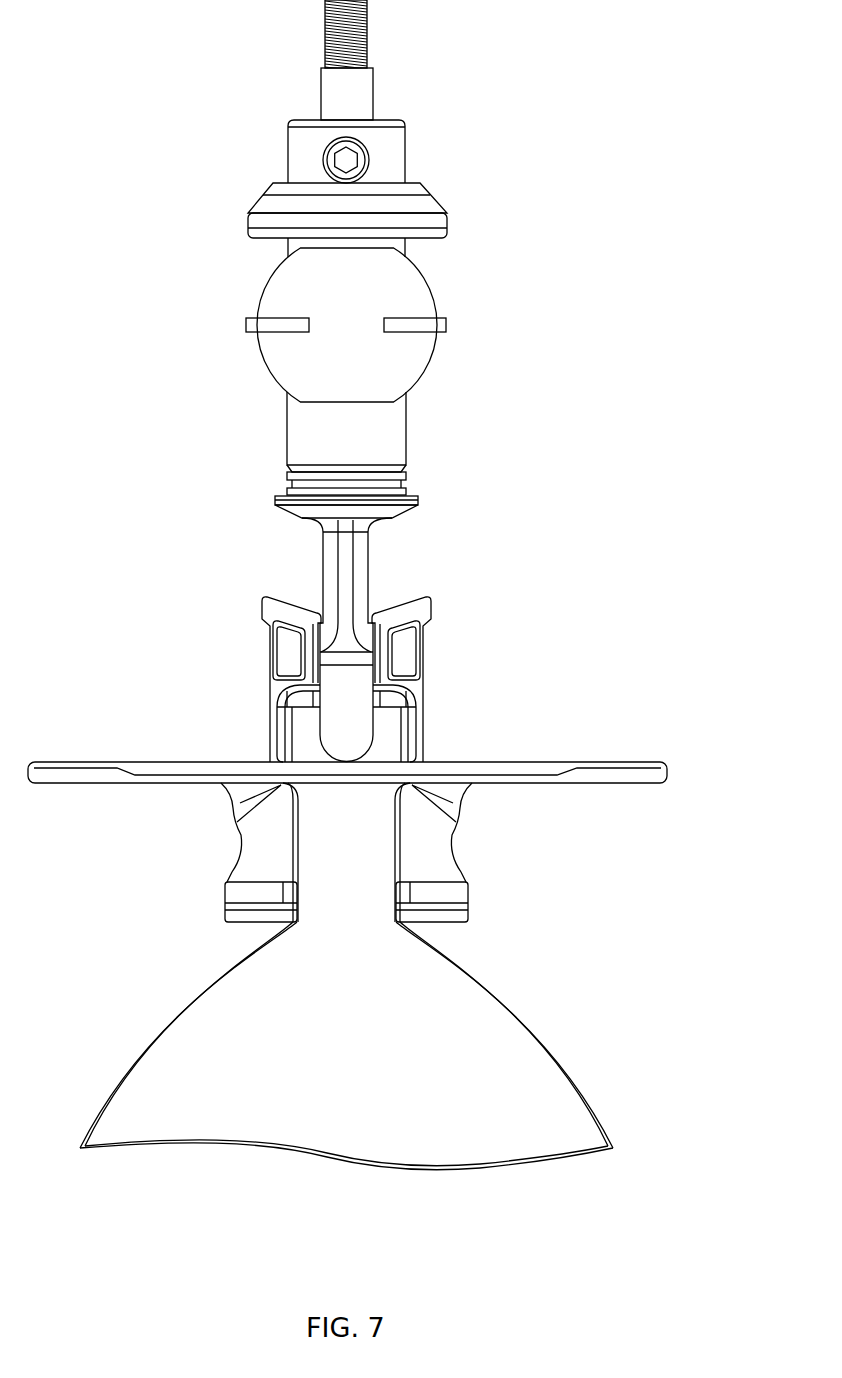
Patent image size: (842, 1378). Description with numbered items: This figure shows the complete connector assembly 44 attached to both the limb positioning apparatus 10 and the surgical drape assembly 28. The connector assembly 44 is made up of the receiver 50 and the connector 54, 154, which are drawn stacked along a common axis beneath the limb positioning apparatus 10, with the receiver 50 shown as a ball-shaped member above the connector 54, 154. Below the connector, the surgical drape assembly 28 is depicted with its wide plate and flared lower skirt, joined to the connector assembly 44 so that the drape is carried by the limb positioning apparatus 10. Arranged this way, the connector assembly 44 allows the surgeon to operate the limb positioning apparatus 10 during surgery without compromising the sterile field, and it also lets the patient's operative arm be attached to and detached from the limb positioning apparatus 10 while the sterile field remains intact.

The limb positioning apparatus 10 is at (412, 68).
The connector assembly 44 is at (177, 70).
The receiver 50 is at (417, 292).
The connector 54 is at (421, 517).
The connector 154 is at (401, 499).
The surgical drape assembly 28 is at (97, 890).